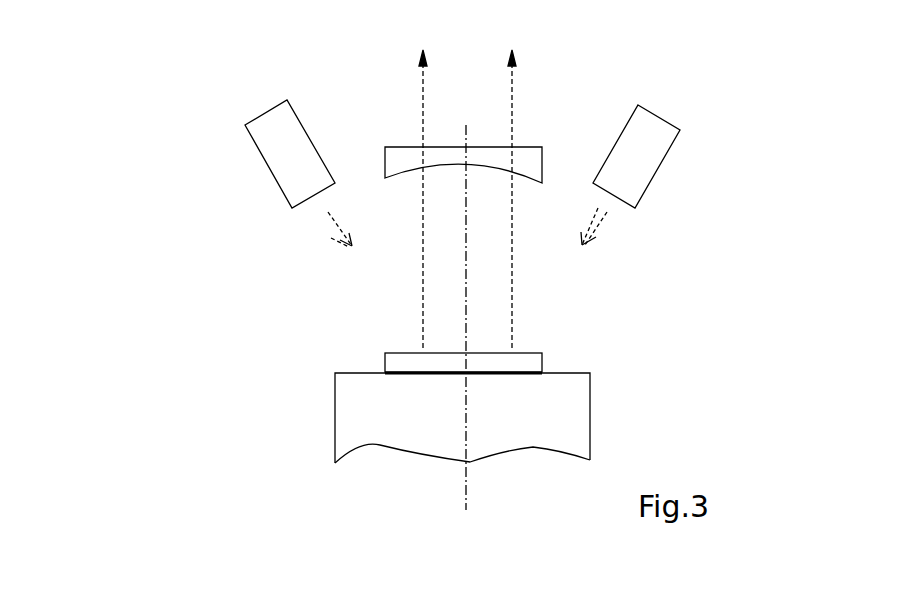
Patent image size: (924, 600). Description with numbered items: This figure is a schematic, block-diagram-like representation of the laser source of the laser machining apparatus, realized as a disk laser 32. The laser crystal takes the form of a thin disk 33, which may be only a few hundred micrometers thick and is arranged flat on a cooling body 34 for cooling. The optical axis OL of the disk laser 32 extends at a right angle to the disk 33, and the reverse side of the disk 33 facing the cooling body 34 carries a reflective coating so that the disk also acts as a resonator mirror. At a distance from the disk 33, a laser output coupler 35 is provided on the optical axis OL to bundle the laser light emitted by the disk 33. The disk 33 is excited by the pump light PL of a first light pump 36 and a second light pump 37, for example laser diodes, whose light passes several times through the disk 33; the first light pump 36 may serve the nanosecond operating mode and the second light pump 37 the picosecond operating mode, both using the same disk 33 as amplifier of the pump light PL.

The disk laser 32 is at (777, 207).
The disk 33 is at (540, 363).
The cooling body 34 is at (582, 417).
The laser output coupler 35 is at (527, 147).
The first light pump 36 is at (650, 177).
The second light pump 37 is at (267, 172).
The pump light PL is at (330, 235).
The optical axis OL is at (468, 493).